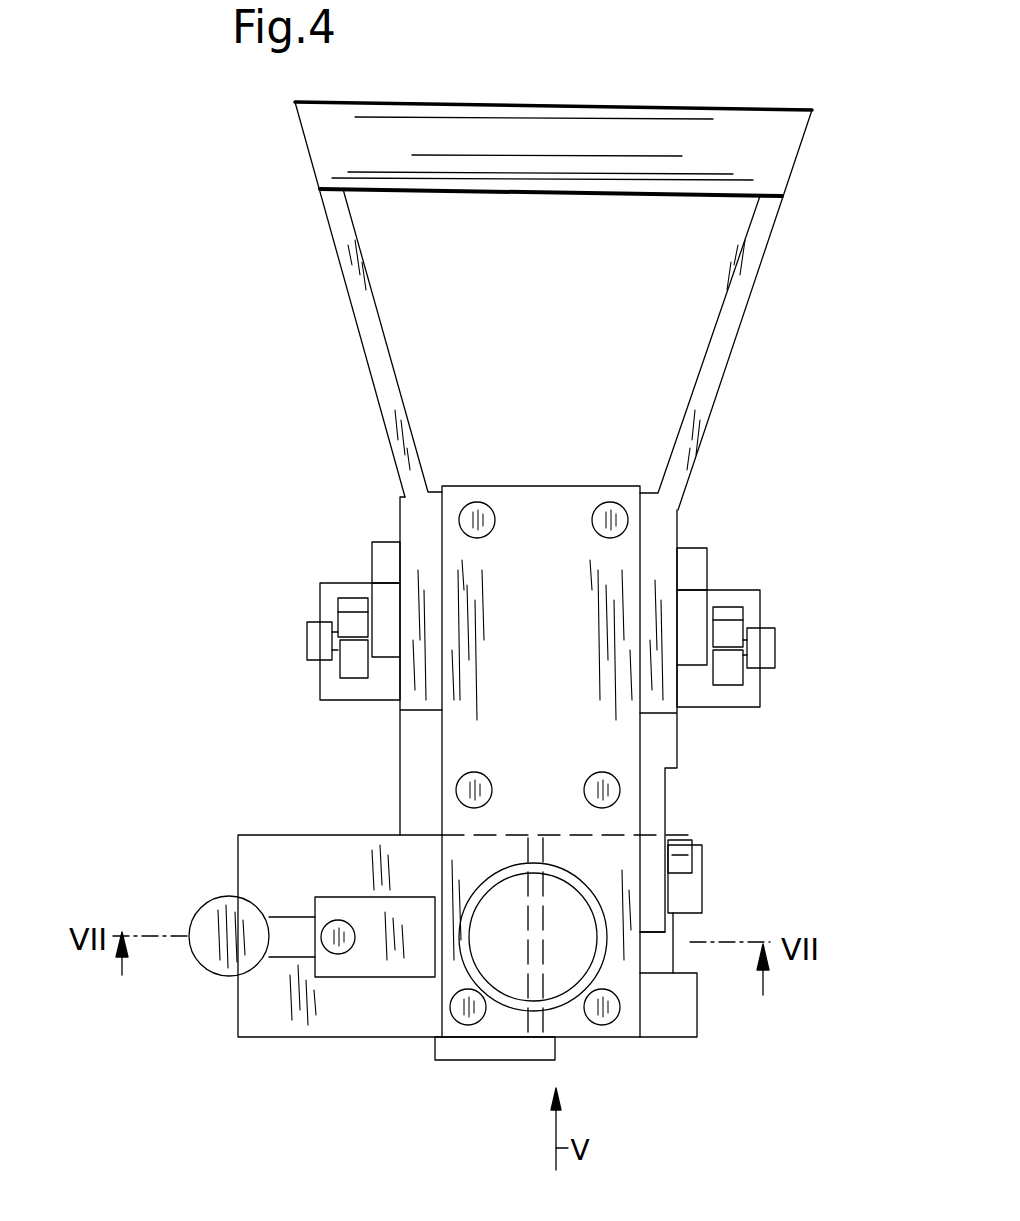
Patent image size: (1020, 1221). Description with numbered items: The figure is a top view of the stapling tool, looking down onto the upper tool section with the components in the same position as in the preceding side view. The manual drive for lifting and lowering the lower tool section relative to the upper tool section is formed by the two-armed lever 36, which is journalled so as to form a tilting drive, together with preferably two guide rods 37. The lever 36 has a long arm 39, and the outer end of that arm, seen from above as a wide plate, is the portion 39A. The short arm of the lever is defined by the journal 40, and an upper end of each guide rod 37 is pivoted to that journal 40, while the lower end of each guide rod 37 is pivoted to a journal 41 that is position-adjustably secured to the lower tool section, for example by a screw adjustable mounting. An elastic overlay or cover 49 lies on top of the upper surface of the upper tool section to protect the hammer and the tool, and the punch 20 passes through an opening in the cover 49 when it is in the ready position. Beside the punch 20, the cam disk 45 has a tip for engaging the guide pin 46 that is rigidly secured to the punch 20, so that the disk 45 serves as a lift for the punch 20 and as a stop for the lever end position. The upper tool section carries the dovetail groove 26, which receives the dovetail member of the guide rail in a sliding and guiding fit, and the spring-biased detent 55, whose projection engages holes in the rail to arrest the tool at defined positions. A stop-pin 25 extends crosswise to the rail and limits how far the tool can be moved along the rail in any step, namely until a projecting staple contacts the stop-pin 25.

The hopper top band 39A is at (518, 138).
The long arm 39 is at (338, 228).
The two-armed lever 36 is at (420, 530).
The guide rod 37 is at (380, 615).
The journal 40 is at (345, 613).
The journal 41 is at (318, 637).
The elastic overlay or cover 49 is at (608, 560).
The cam disk 45 is at (650, 893).
The guide pin 46 is at (652, 945).
The dovetail groove 26 is at (282, 1025).
The detent 55 is at (382, 962).
The punch 20 is at (553, 975).
The stop-pin 25 is at (531, 985).